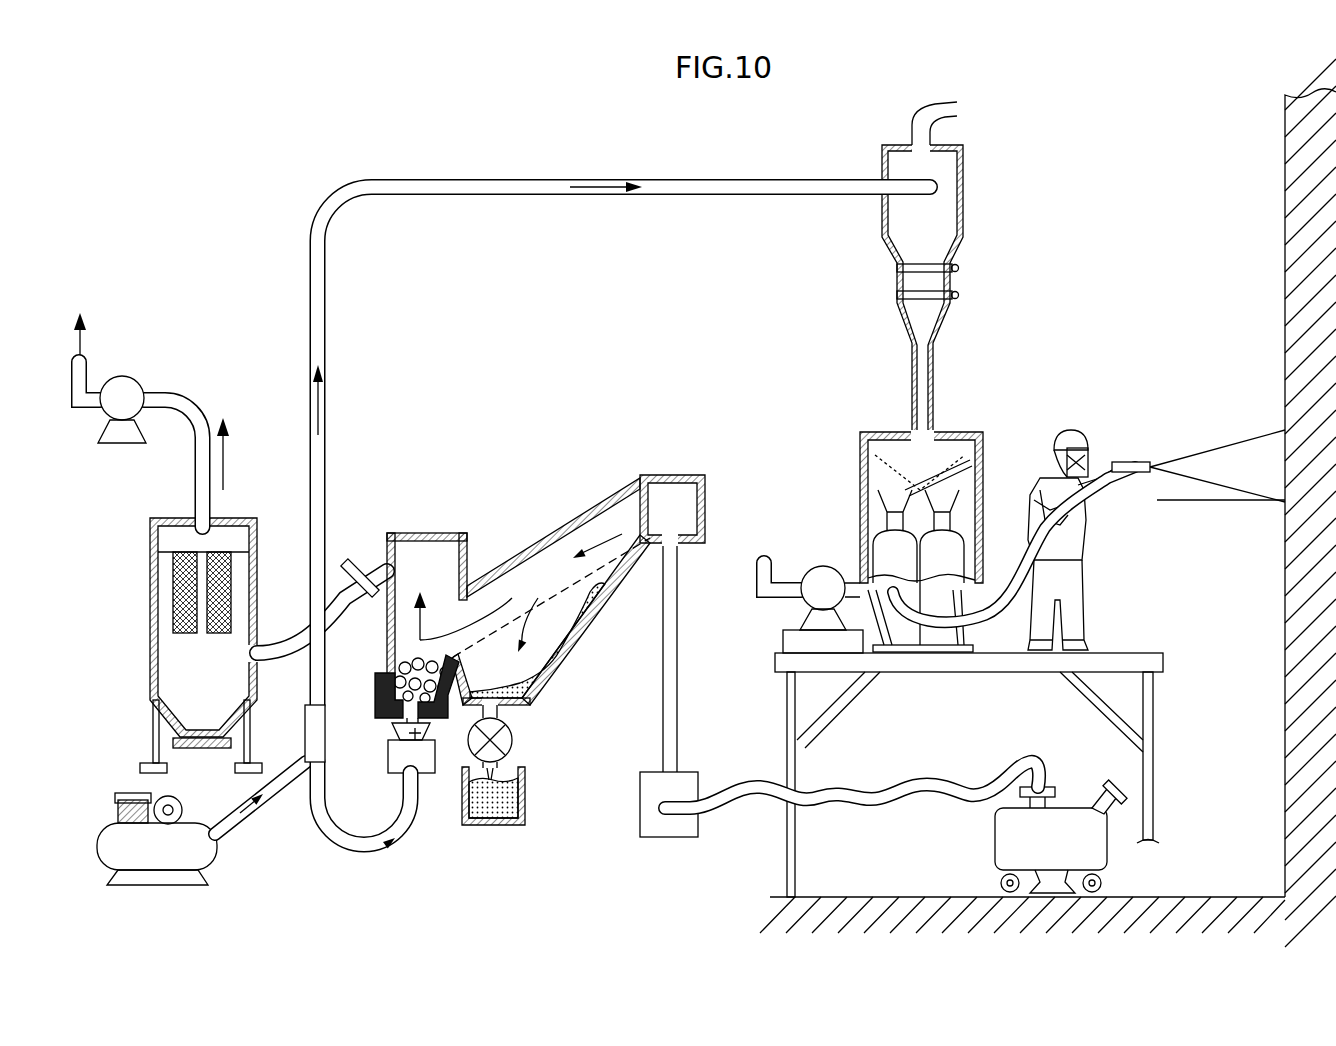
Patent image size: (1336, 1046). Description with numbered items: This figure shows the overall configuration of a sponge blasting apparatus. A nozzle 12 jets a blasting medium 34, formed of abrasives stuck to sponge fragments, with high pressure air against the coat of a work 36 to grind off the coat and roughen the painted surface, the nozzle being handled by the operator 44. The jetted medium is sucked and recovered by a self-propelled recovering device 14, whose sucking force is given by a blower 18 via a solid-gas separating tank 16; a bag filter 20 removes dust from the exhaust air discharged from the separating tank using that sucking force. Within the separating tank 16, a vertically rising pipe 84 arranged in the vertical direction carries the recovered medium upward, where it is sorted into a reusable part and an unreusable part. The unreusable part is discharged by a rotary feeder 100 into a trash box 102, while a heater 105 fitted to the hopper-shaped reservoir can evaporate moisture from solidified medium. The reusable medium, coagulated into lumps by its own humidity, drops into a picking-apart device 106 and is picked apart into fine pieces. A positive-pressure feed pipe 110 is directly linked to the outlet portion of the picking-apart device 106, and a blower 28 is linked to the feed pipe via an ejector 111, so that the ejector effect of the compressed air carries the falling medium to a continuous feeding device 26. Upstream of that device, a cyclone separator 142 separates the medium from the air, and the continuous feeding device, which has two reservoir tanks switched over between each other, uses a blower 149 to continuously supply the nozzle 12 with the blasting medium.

The nozzle 12 is at (1142, 460).
The self-propelled recovering device 14 is at (1067, 812).
The solid-gas separating tank 16 is at (557, 522).
The blower 18 is at (128, 378).
The bag filter 20 is at (270, 538).
The continuous feeding device 26 is at (992, 445).
The blower 28 is at (218, 852).
The blasting medium 34 is at (1226, 505).
The work 36 is at (1285, 247).
The operator 44 is at (1098, 425).
The vertically rising pipe 84 is at (680, 667).
The rotary feeder 100 is at (513, 743).
The trash box 102 is at (515, 805).
The heater 105 is at (446, 735).
The picking-apart device 106 is at (378, 746).
The positive-pressure feed pipe 110 is at (325, 440).
The ejector 111 is at (330, 748).
The cyclone separator 142 is at (970, 172).
The blower 149 is at (822, 566).